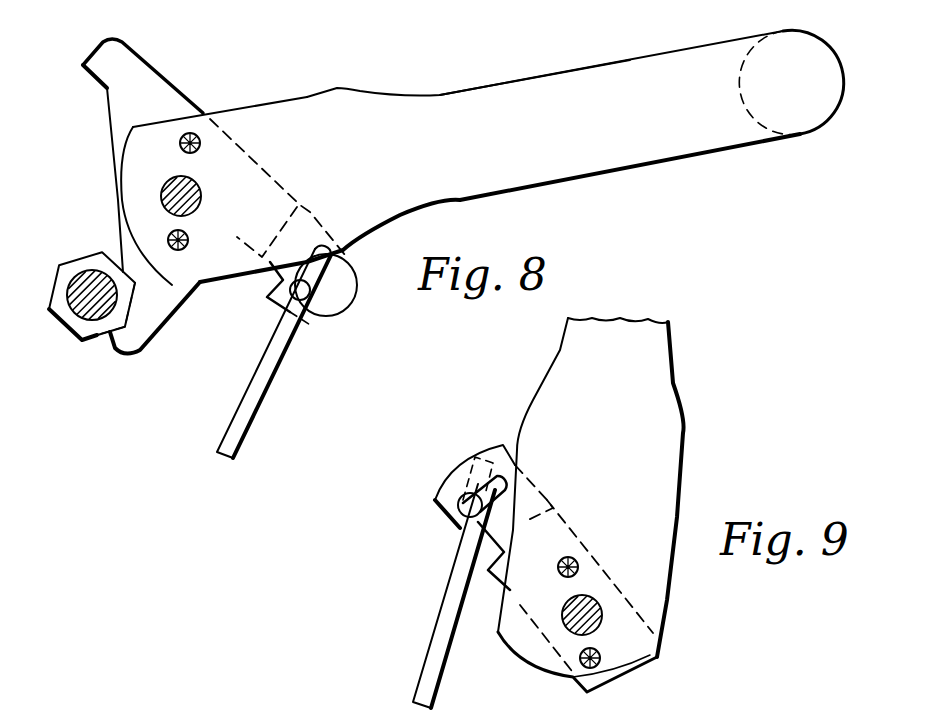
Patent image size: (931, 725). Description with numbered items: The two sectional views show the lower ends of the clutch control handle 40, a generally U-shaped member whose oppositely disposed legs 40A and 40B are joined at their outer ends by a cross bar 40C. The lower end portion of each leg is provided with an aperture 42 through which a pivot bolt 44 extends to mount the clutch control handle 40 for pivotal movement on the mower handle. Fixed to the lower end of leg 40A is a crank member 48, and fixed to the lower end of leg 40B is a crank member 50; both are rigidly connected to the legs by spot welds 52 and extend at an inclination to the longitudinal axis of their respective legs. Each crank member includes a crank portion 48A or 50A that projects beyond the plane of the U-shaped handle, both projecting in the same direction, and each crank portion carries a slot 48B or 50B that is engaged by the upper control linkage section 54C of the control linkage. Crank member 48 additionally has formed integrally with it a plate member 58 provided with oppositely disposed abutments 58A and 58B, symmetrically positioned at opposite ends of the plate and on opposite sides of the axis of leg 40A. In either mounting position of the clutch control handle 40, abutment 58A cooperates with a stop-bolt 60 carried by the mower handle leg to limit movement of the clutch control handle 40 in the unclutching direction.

In FIG. 8, the clutch control handle 40 is at (705, 164).
In FIG. 8, the leg 40A is at (476, 94).
In FIG. 9, the leg 40B is at (672, 364).
In FIG. 8, the cross bar 40C is at (840, 58).
In FIG. 8, the aperture 42 is at (201, 199).
In FIG. 9, the aperture 42 is at (595, 600).
In FIG. 8, the pivot bolt 44 is at (167, 186).
In FIG. 9, the pivot bolt 44 is at (565, 604).
In FIG. 8, the crank member 48 is at (168, 84).
In FIG. 8, the crank portion 48A is at (310, 315).
In FIG. 8, the slot 48B is at (343, 293).
In FIG. 9, the crank member 50 is at (462, 458).
In FIG. 9, the crank portion 50A is at (445, 472).
In FIG. 9, the slot 50B is at (515, 462).
In FIG. 8, the spot weld 52 is at (197, 150).
In FIG. 9, the spot weld 52 is at (568, 556).
In FIG. 8, the upper control linkage section 54C is at (247, 385).
In FIG. 9, the upper control linkage section 54C is at (440, 612).
In FIG. 8, the plate member 58 is at (115, 118).
In FIG. 8, the abutment 58A is at (97, 327).
In FIG. 8, the abutment 58B is at (92, 75).
In FIG. 8, the stop-bolt 60 is at (87, 278).